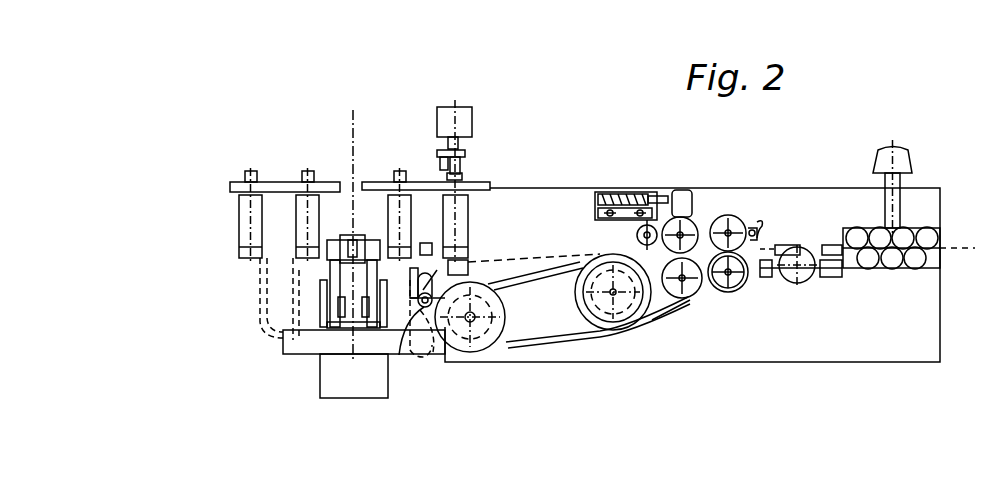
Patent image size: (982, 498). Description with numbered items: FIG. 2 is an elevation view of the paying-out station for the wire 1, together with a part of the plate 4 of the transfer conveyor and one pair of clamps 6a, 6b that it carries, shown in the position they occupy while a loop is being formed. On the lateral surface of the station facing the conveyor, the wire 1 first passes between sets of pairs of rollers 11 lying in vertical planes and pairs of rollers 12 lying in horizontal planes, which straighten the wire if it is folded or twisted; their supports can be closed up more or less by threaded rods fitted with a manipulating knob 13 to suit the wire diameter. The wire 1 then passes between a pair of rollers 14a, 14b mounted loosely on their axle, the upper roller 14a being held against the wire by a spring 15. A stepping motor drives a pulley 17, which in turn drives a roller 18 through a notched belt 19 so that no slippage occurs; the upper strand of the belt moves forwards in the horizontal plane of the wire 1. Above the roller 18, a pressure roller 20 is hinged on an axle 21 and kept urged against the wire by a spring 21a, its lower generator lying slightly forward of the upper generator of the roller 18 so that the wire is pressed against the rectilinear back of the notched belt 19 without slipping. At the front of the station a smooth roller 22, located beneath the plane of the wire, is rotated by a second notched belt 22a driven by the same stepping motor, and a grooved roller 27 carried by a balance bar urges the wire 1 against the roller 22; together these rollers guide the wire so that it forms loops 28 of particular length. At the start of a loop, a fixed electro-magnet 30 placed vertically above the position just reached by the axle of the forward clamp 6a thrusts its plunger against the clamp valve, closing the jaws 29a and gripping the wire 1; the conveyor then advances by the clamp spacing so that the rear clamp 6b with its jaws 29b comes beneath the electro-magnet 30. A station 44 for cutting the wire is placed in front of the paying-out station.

The wire 1 is at (537, 250).
The plate 4 is at (368, 185).
The forward clamp 6a is at (403, 212).
The rear clamp 6b is at (312, 228).
The pairs of rollers 11 is at (892, 266).
The pairs of rollers 12 is at (814, 247).
The manipulating knob 13 is at (898, 153).
The upper roller 14a is at (733, 217).
The lower roller 14b is at (733, 297).
The spring 15 is at (757, 225).
The pulley 17 is at (602, 328).
The roller 18 is at (692, 293).
The notched belt 19 is at (657, 317).
The pressure roller 20 is at (693, 227).
The axle 21 is at (638, 235).
The spring 21a is at (632, 197).
The smooth roller 22 is at (472, 347).
The second notched belt 22a is at (525, 330).
The grooved roller 27 is at (418, 305).
The loops 28 is at (267, 337).
The jaws 29a is at (425, 250).
The jaws 29b is at (468, 262).
The electro-magnet 30 is at (465, 122).
The cutting station 44 is at (356, 389).